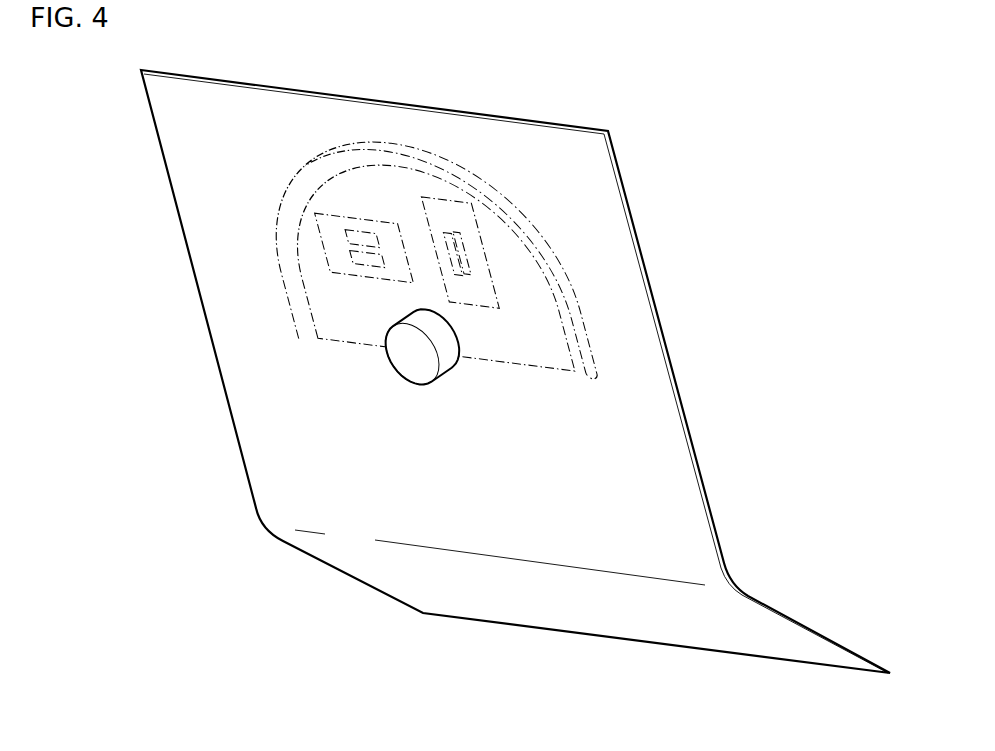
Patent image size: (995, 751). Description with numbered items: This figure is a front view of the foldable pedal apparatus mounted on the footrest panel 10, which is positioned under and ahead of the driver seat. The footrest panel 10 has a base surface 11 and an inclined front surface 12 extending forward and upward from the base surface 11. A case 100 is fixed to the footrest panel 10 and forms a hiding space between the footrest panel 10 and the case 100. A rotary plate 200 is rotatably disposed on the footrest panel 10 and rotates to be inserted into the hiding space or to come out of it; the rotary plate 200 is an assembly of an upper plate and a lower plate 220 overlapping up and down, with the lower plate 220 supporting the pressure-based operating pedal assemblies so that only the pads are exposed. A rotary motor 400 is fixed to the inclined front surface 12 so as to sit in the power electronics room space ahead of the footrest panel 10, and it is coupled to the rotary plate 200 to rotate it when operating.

The footrest panel 10 is at (703, 431).
The base surface 11 is at (558, 603).
The inclined front surface 12 is at (587, 200).
The case 100 is at (424, 251).
The rotary plate 200 is at (420, 251).
The lower plate 220 is at (421, 260).
The rotary motor 400 is at (408, 358).